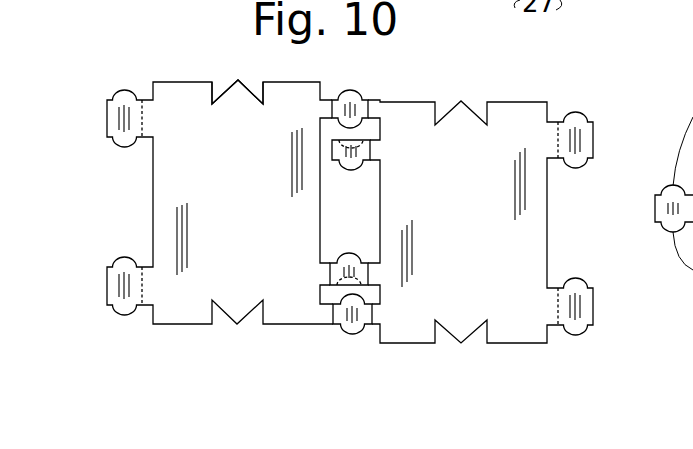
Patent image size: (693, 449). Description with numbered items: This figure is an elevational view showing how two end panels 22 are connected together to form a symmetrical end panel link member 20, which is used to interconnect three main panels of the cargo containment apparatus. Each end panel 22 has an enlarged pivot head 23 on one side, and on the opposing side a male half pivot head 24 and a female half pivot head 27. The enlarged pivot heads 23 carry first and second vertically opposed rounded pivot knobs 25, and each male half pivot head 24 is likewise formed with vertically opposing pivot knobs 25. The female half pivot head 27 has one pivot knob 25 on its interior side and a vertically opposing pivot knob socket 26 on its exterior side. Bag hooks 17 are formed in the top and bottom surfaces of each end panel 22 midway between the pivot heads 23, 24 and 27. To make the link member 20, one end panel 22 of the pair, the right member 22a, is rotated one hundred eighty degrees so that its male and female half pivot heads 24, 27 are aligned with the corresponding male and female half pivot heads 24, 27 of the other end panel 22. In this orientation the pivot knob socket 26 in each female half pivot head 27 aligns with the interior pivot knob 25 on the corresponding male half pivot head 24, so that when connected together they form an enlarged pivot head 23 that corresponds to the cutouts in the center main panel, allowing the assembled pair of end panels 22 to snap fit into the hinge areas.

The bag hook 17 is at (255, 90).
The link member 20 is at (514, 70).
The end panel 22 is at (136, 187).
The right member 22a is at (558, 233).
The enlarged pivot head 23 is at (102, 100).
The male half pivot head 24 is at (363, 93).
The pivot knob 25 is at (362, 300).
The pivot knob socket 26 is at (350, 283).
The female half pivot head 27 is at (365, 163).